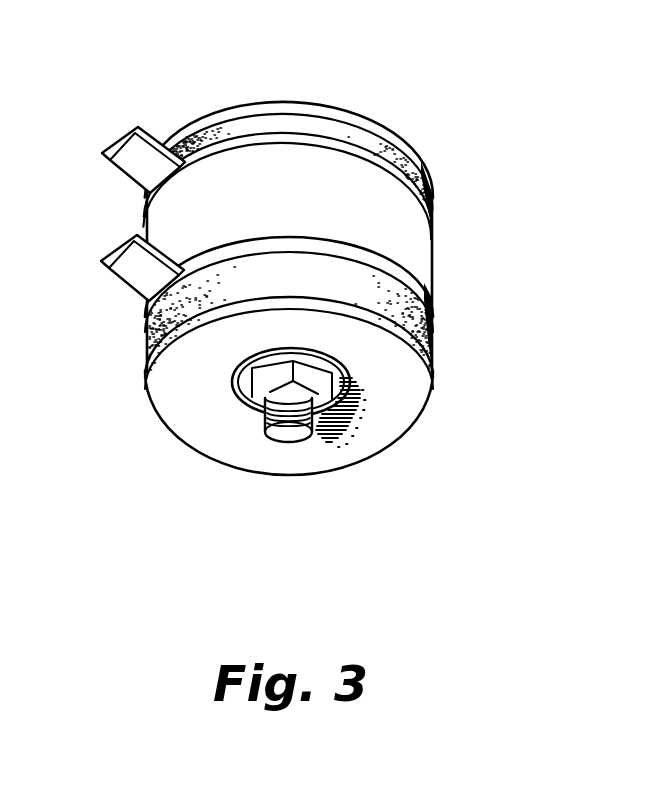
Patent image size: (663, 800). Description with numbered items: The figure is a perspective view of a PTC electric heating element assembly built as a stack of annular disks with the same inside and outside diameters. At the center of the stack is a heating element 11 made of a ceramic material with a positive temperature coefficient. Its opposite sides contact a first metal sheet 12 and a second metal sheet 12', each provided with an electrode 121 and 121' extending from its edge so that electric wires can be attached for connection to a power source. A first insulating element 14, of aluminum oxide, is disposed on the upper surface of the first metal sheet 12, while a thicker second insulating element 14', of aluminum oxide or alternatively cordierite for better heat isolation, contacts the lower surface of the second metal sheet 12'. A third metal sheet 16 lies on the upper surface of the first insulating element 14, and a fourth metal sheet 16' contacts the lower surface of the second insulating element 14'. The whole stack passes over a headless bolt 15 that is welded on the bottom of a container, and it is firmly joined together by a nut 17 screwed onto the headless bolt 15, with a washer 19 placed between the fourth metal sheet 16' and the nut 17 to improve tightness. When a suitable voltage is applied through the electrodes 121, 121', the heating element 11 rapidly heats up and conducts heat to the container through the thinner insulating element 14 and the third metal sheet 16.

The heating element 11 is at (418, 234).
The first metal sheet 12 is at (320, 178).
The second metal sheet 12' is at (328, 307).
The first insulating element 14 is at (300, 129).
The second insulating element 14' is at (328, 318).
The third metal sheet 16 is at (291, 124).
The fourth metal sheet 16' is at (326, 359).
The electrode 121 is at (110, 160).
The electrode 121' is at (113, 268).
The washer 19 is at (234, 380).
The headless bolt 15 is at (288, 437).
The nut 17 is at (322, 426).